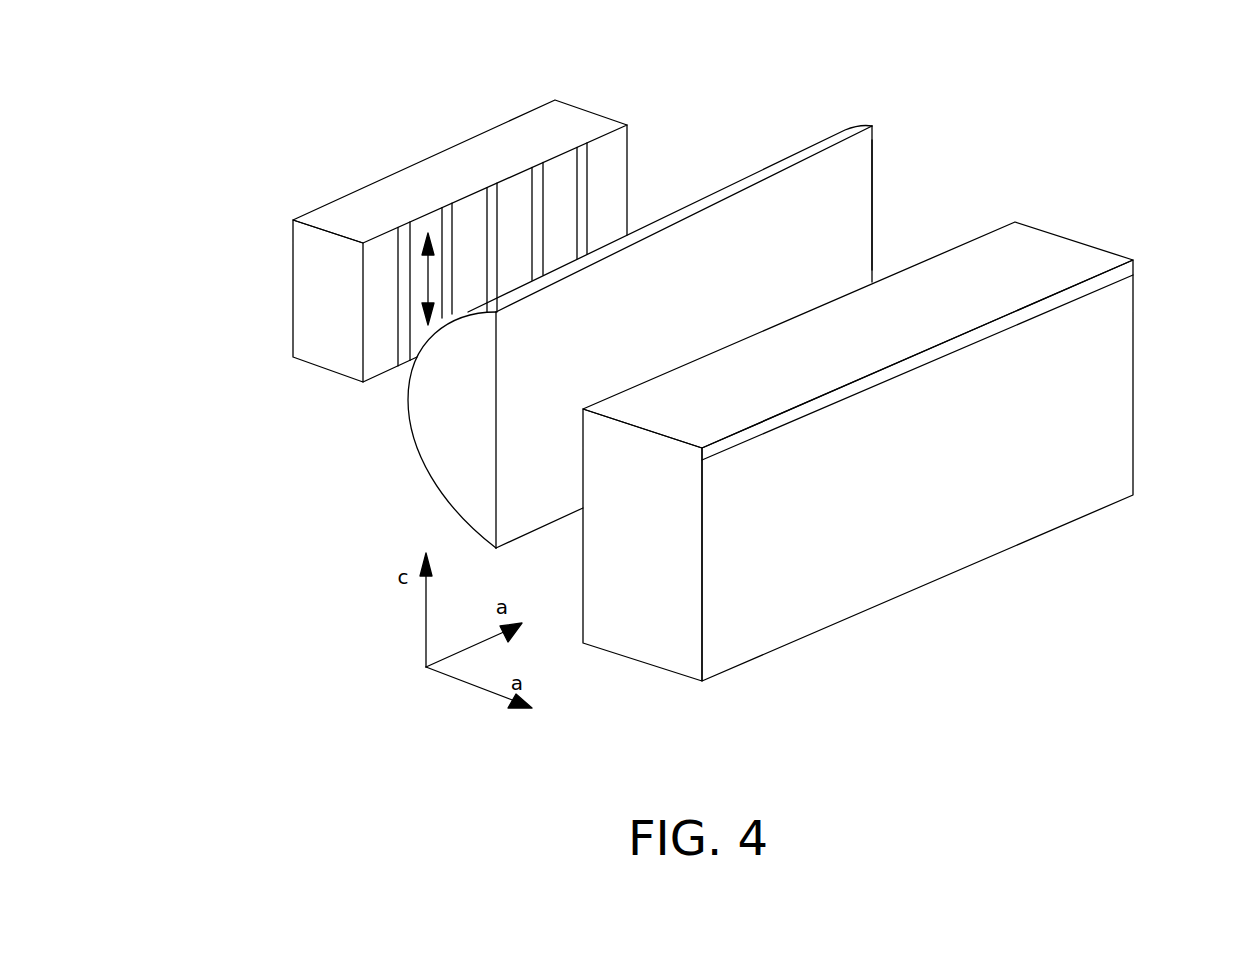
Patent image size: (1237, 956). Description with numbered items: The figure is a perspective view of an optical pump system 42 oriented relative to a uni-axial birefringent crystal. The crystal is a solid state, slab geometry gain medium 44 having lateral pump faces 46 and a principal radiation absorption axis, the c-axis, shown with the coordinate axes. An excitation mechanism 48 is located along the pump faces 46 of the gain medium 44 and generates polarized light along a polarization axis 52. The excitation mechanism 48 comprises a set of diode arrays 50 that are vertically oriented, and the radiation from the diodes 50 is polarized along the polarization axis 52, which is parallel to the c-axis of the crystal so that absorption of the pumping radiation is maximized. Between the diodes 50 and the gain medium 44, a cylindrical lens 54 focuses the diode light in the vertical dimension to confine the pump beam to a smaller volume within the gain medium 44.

The optical detection assembly 42 is at (752, 745).
The gain medium 44 is at (1136, 392).
The pump faces 46 is at (872, 572).
The excitation mechanism 48 is at (582, 108).
The diode arrays 50 is at (606, 203).
The polarization axis 52 is at (428, 278).
The cylindrical lens 54 is at (873, 216).